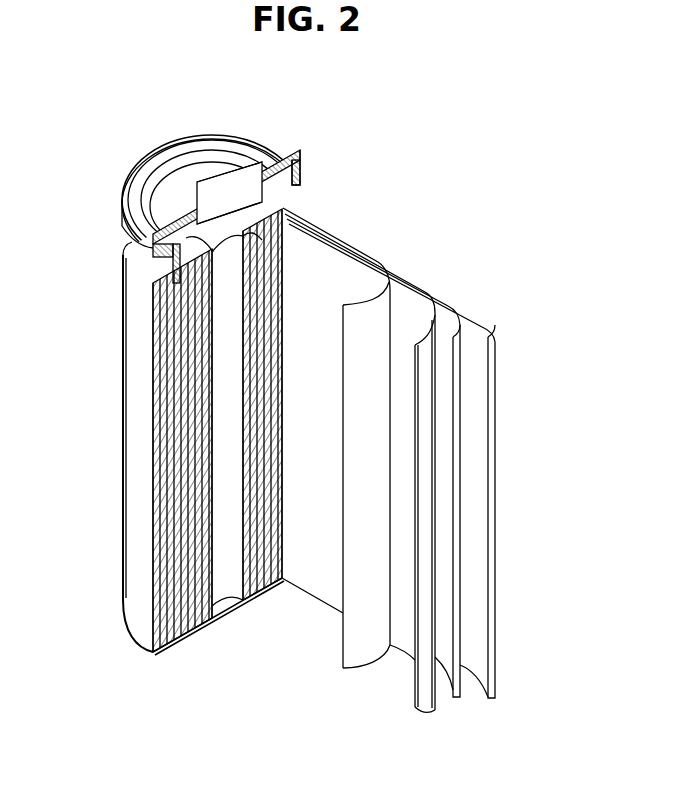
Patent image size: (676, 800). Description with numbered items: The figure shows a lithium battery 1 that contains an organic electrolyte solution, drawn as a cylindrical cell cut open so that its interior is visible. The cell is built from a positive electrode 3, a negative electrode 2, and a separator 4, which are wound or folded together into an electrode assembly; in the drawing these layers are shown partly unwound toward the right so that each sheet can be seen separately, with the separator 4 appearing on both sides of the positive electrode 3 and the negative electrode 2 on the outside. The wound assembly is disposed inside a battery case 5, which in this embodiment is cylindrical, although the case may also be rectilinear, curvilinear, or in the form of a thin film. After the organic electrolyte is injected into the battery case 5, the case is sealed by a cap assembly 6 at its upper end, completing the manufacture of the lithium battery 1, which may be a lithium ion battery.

The lithium battery 1 is at (405, 149).
The negative electrode 2 is at (478, 313).
The positive electrode 3 is at (427, 310).
The separator 4 is at (374, 305).
The battery case 5 is at (126, 427).
The cap assembly 6 is at (207, 168).